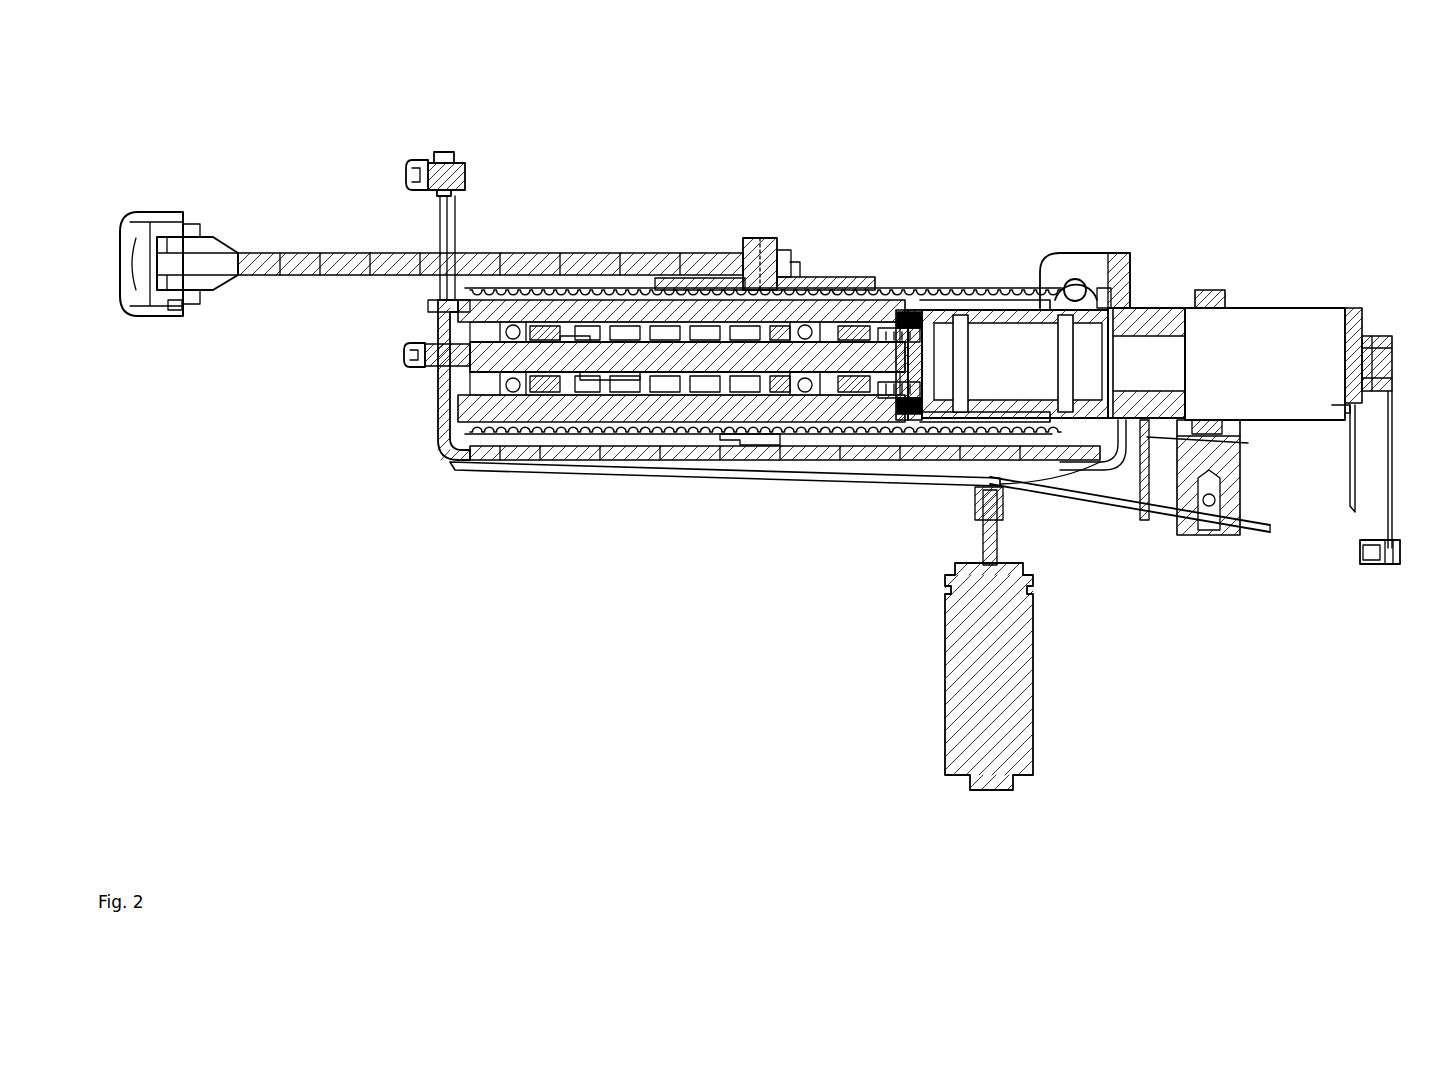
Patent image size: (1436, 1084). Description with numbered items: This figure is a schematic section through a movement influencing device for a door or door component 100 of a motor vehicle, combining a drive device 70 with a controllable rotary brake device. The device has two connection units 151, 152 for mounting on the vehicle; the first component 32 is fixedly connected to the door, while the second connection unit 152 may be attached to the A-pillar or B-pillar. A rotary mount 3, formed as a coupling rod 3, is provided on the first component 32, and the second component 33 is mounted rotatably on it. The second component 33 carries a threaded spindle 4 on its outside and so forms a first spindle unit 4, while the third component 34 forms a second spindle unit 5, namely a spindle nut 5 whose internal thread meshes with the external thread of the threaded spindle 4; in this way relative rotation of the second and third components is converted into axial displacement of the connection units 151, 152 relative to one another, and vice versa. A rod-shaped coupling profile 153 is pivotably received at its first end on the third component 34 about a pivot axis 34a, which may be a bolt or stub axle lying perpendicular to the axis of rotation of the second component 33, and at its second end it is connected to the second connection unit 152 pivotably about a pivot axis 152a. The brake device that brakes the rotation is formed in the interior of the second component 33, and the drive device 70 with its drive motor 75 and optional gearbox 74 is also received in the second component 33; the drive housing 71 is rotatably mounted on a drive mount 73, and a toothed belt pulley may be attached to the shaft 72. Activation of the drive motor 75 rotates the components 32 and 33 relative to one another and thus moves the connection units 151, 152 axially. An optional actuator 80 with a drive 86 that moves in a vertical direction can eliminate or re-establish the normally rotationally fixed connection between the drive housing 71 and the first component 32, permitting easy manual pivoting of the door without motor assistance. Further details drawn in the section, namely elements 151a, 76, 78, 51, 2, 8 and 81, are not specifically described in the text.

The door component 100 is at (212, 136).
The second connection unit 152 is at (181, 210).
The pivot axis 152a is at (176, 312).
The coupling profile 153 is at (308, 252).
The fixing screw head 151a is at (420, 156).
The first connection unit 151 is at (447, 156).
The second component 33 is at (507, 292).
The threaded spindle 4 is at (563, 288).
The spindle nut 5 is at (661, 285).
The pivot axis 34a is at (762, 228).
The third component 34 is at (805, 280).
The seal 76 is at (883, 298).
The gearbox 74 is at (1000, 338).
The drive housing 71 is at (1022, 308).
The drive device 70 is at (1262, 238).
The drive motor 75 is at (1276, 326).
The sensor 78 is at (1378, 343).
The first component 32 is at (436, 416).
The bottom cover 51 is at (500, 458).
The lower worm 2 is at (566, 410).
The bearing 8 is at (592, 406).
The rotary mount 3 is at (622, 378).
The shaft 72 is at (872, 445).
The drive mount 73 is at (906, 440).
The arm 81 is at (1092, 505).
The actuator 80 is at (1238, 568).
The drive 86 is at (950, 688).